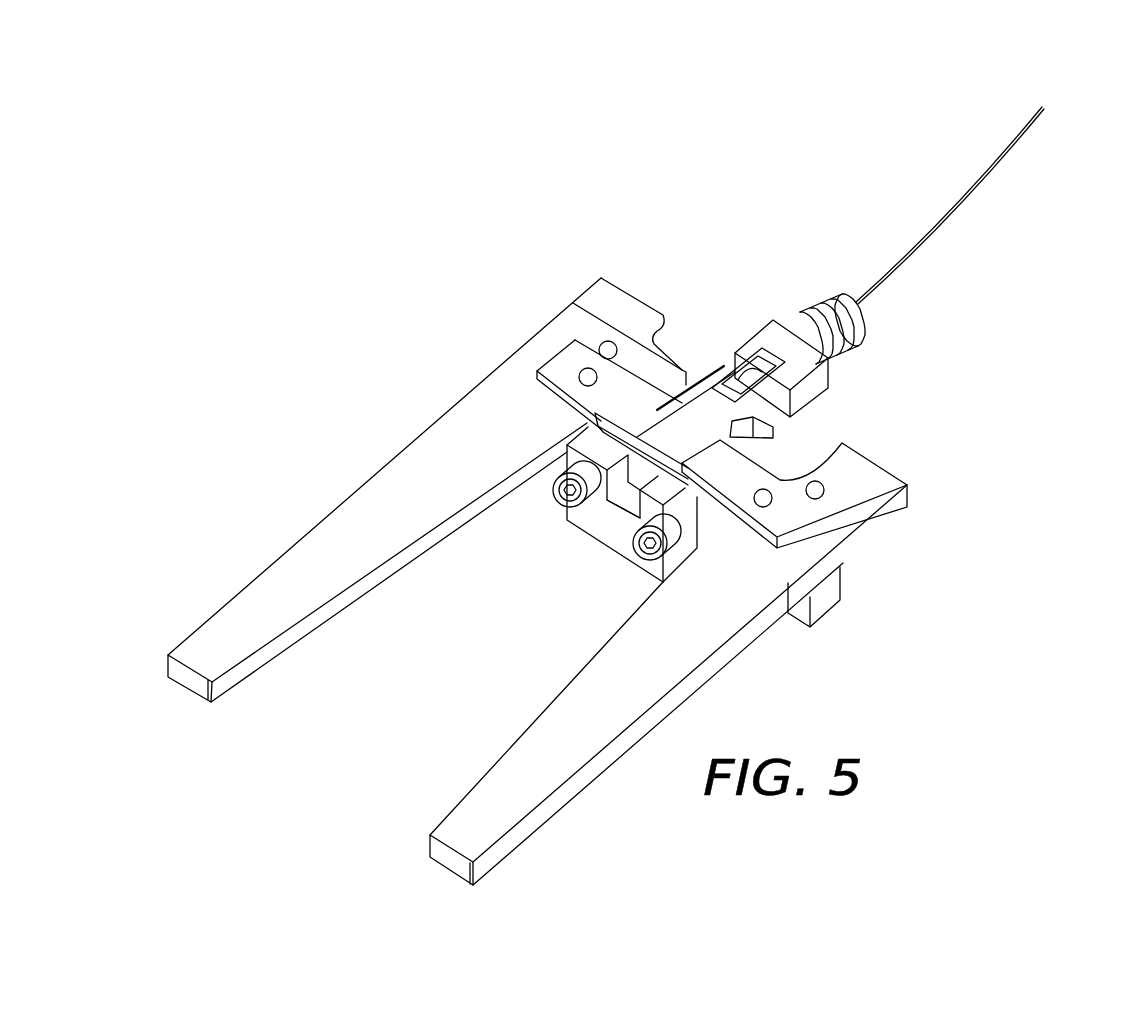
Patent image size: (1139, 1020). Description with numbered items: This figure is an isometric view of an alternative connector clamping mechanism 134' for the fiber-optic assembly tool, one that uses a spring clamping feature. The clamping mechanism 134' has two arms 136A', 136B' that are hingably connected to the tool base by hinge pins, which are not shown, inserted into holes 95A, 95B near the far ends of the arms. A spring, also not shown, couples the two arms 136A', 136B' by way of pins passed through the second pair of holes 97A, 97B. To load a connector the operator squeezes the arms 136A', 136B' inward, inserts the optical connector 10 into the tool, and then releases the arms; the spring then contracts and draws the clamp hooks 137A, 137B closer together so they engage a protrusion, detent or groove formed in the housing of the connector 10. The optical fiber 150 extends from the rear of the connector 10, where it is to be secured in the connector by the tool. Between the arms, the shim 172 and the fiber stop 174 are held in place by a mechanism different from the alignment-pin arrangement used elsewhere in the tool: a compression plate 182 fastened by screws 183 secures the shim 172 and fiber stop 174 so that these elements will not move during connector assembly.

The connector 10 is at (780, 330).
The hole 95A is at (771, 501).
The hole 95B is at (582, 371).
The hole 97A is at (820, 483).
The hole 97B is at (606, 341).
The connector clamping mechanism 134' is at (263, 348).
The arm 136A' is at (650, 685).
The arm 136B' is at (384, 490).
The clamp hook 137A is at (748, 444).
The clamp hook 137B is at (680, 387).
The optical fiber 150 is at (947, 213).
The shim 172 is at (595, 428).
The fiber stop 174 is at (590, 416).
The compression plate 182 is at (627, 500).
The screws 183 is at (560, 497).